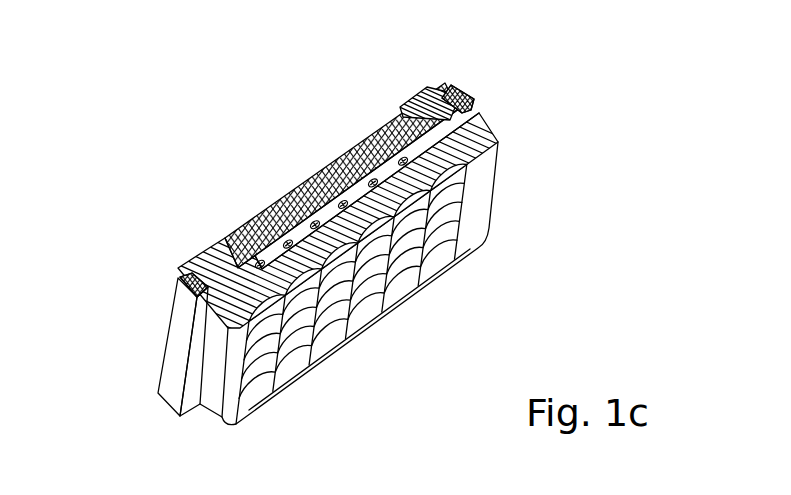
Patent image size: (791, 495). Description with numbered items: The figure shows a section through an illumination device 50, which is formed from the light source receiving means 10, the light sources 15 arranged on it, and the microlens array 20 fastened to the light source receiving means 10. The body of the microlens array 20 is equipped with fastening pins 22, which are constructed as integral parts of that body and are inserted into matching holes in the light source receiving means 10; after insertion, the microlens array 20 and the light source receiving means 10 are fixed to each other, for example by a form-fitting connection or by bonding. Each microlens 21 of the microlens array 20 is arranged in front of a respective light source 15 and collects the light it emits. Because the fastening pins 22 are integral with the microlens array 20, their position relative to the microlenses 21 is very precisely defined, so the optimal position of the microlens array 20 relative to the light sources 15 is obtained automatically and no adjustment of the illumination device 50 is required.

The illumination device 50 is at (118, 80).
The microlens array 20 is at (477, 173).
The microlens 21 is at (433, 266).
The light source 15 is at (355, 155).
The fastening pin 22 is at (417, 92).
The light source receiving means 10 is at (460, 88).